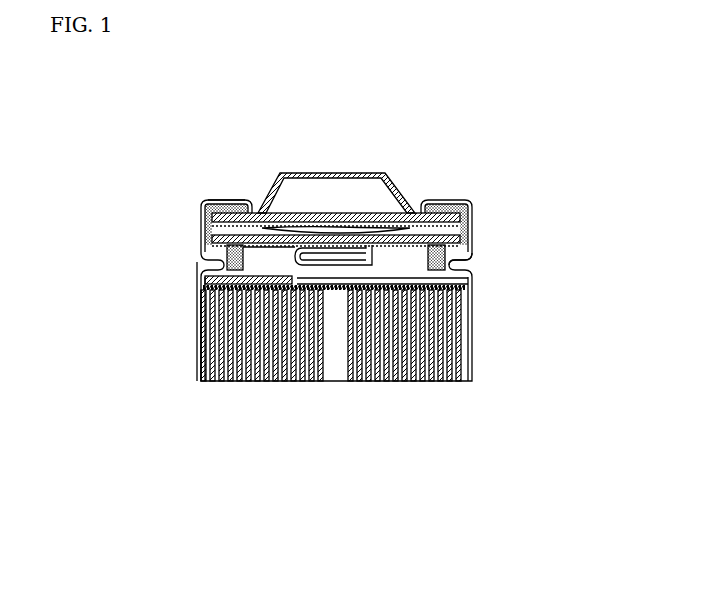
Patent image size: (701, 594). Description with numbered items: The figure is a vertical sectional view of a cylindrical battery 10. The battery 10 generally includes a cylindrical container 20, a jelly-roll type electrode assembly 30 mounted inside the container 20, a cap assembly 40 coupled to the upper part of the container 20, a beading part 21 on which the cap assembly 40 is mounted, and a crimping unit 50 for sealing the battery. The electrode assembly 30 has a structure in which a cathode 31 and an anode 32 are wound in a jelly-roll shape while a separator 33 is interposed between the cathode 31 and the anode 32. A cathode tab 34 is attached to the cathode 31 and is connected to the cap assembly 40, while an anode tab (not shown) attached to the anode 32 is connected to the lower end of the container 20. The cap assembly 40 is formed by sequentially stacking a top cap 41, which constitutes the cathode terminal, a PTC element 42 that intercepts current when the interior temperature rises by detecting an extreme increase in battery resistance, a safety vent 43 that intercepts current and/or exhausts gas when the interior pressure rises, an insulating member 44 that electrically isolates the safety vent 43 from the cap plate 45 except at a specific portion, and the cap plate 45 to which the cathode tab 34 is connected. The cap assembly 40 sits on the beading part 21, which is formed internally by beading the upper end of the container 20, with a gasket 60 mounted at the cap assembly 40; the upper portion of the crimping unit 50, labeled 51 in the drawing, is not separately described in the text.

The cylindrical battery 10 is at (98, 100).
The cylindrical container 20 is at (473, 370).
The beading part 21 is at (297, 262).
The jelly-roll type electrode assembly 30 is at (331, 395).
The cathode 31 is at (404, 374).
The anode 32 is at (302, 381).
The separator 33 is at (320, 381).
The cathode tab 34 is at (198, 342).
The cap assembly 40 is at (416, 220).
The top cap 41 is at (357, 172).
The positive temperature coefficient (PTC) element 42 is at (336, 224).
The safety vent 43 is at (455, 218).
The insulating member 44 is at (445, 235).
The cap plate 45 is at (475, 262).
The crimping unit 50 is at (257, 200).
The gasket top 51 is at (232, 200).
The gasket 60 is at (207, 226).